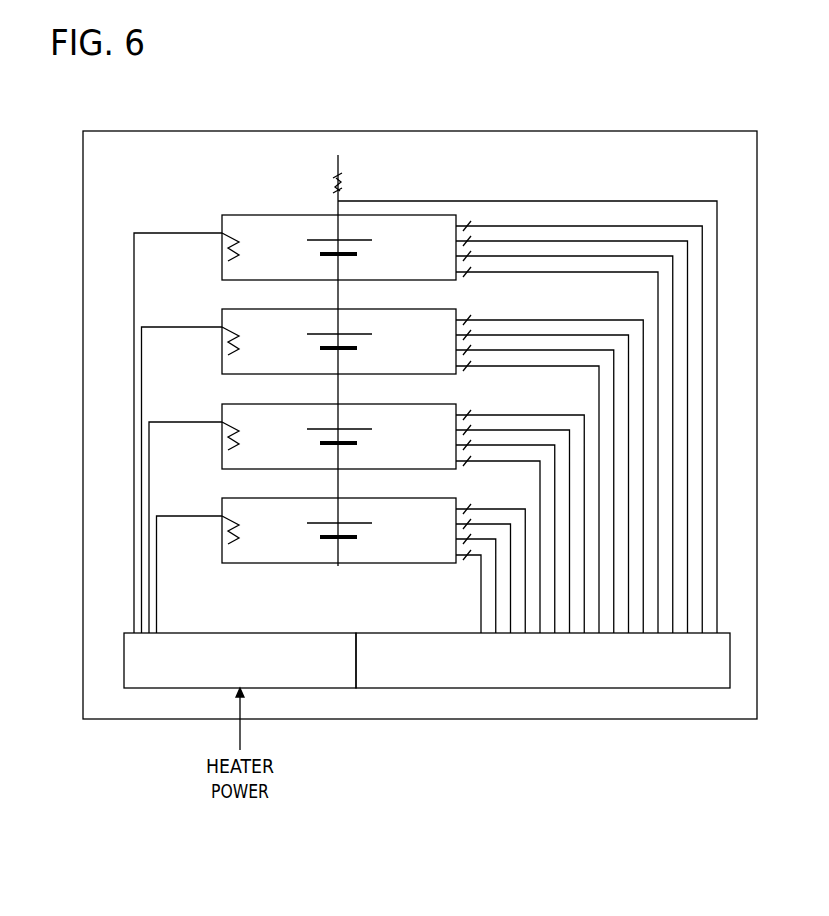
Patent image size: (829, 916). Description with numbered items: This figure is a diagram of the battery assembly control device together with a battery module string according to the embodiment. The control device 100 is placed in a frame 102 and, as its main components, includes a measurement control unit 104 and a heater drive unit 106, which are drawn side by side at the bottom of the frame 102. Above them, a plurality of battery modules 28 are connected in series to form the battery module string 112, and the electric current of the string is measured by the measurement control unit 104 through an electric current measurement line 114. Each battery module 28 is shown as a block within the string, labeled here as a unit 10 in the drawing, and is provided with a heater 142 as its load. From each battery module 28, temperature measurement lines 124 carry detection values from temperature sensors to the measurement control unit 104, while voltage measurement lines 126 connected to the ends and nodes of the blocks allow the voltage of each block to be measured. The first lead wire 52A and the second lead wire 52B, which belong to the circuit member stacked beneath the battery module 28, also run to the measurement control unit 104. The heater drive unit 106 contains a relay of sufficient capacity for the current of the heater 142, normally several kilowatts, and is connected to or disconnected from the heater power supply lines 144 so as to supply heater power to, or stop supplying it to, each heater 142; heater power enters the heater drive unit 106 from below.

The gas sensor element 10 is at (252, 213).
The battery module 28 is at (364, 247).
The first lead wire 52A is at (557, 256).
The second lead wire 52B is at (572, 272).
The control device 100 is at (427, 679).
The frame 102 is at (455, 131).
The measurement control unit 104 is at (411, 633).
The heater drive unit 106 is at (183, 633).
The battery module string 112 is at (389, 150).
The electric current measurement line 114 is at (478, 201).
The temperature measurement line 124 is at (692, 226).
The voltage measurement line 126 is at (638, 241).
The heater 142 is at (240, 247).
The heater power supply line 144 is at (165, 233).